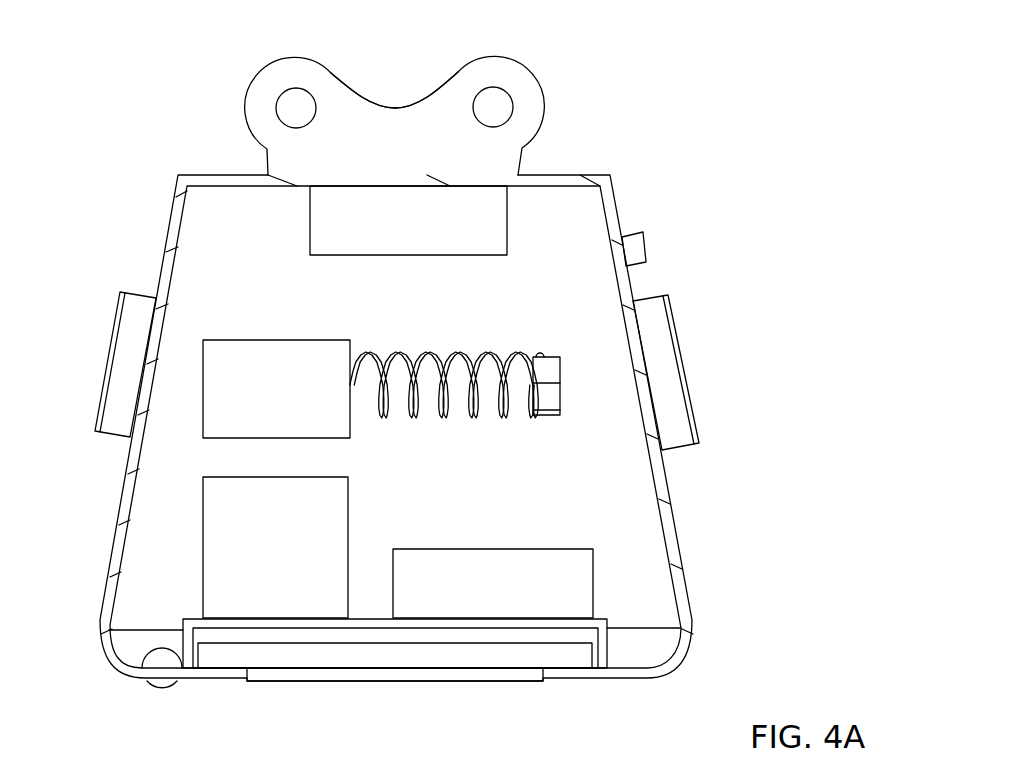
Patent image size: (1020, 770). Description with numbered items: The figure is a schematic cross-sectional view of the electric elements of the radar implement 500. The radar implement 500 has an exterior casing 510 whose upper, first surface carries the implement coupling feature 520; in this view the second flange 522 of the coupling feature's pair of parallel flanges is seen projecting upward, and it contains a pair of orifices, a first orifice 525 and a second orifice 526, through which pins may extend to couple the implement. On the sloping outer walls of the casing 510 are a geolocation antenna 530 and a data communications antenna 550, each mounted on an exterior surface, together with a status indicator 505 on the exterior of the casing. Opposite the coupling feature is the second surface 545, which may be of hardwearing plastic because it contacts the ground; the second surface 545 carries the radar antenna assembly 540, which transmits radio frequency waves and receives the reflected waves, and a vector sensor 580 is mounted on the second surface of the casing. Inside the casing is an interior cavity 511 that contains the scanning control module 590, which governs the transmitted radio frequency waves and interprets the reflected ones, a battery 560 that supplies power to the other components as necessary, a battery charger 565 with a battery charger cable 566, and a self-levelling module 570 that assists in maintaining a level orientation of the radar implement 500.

The radar implement 500 is at (772, 92).
The status indicator 505 is at (643, 246).
The exterior casing 510 is at (173, 210).
The interior cavity 511 is at (245, 212).
The implement coupling feature 520 is at (545, 115).
The second flange 522 is at (398, 120).
The first orifice of second flange 525 is at (493, 108).
The second orifice of second flange 526 is at (295, 108).
The geolocation antenna 530 is at (688, 362).
The radar antenna assembly 540 is at (577, 643).
The second surface 545 is at (212, 672).
The data communications antenna 550 is at (141, 293).
The battery 560 is at (203, 542).
The battery charger 565 is at (203, 393).
The battery charger cable 566 is at (488, 352).
The self-levelling module 570 is at (507, 218).
The vector sensor 580 is at (160, 643).
The scanning control module 590 is at (593, 573).